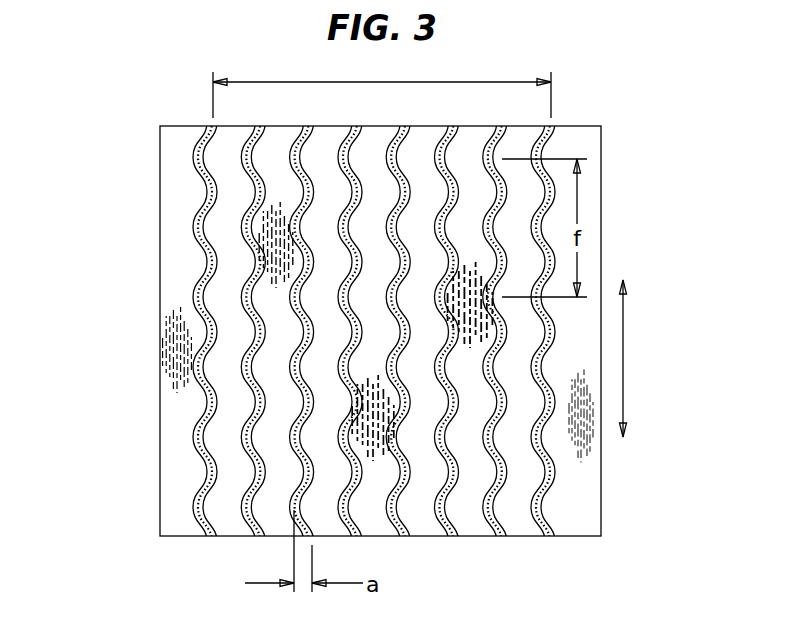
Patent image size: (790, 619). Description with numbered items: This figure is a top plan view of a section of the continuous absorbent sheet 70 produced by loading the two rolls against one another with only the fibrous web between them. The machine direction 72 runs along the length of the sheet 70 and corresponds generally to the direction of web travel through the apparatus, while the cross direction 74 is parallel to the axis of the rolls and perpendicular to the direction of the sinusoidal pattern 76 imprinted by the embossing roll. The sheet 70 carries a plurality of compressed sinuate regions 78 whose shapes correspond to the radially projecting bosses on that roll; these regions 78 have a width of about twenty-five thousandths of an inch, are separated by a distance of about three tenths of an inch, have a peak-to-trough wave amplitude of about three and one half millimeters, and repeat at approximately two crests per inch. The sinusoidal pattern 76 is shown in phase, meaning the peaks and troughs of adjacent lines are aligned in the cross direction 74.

The sheet 70 is at (150, 321).
The machine direction 72 is at (623, 363).
The cross direction 74 is at (483, 82).
The sinusoidal pattern 76 is at (190, 418).
The compressed sinuate regions 78 is at (250, 446).